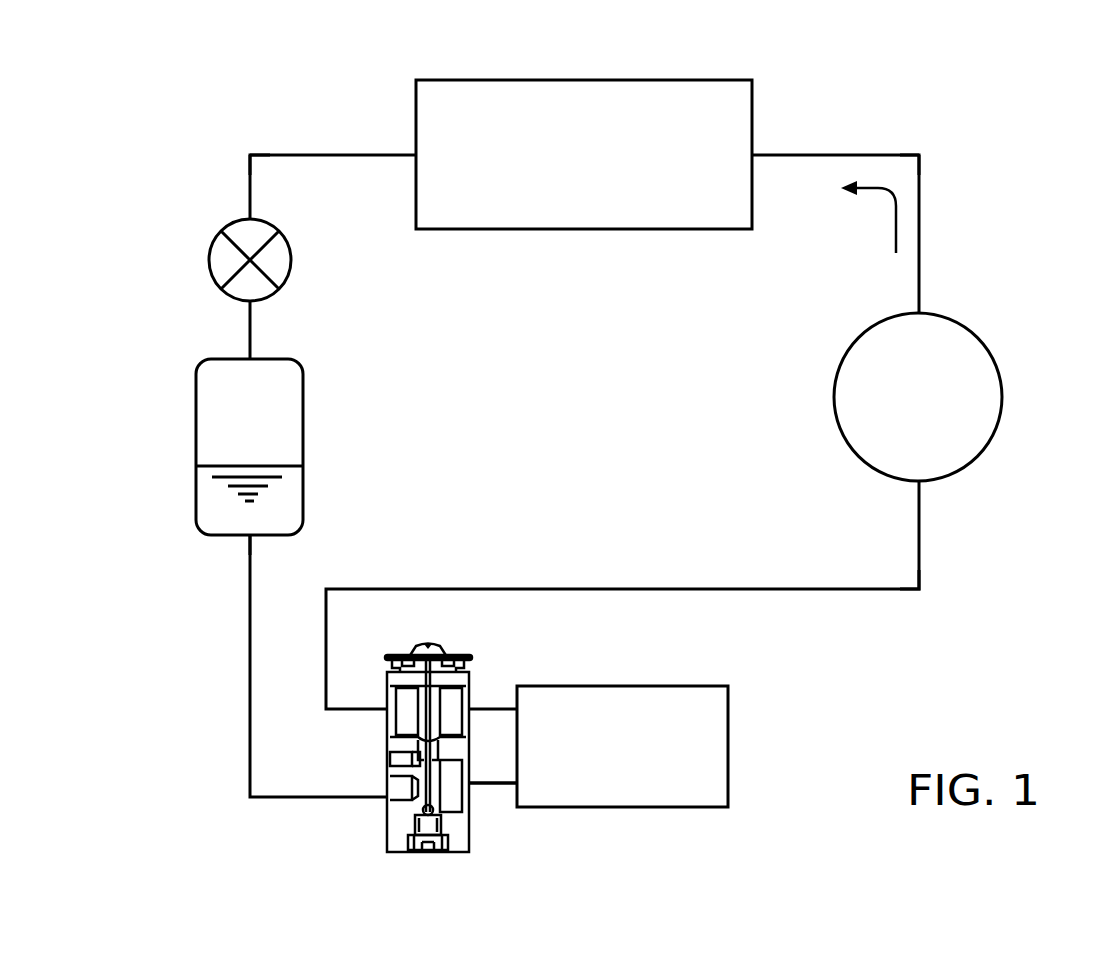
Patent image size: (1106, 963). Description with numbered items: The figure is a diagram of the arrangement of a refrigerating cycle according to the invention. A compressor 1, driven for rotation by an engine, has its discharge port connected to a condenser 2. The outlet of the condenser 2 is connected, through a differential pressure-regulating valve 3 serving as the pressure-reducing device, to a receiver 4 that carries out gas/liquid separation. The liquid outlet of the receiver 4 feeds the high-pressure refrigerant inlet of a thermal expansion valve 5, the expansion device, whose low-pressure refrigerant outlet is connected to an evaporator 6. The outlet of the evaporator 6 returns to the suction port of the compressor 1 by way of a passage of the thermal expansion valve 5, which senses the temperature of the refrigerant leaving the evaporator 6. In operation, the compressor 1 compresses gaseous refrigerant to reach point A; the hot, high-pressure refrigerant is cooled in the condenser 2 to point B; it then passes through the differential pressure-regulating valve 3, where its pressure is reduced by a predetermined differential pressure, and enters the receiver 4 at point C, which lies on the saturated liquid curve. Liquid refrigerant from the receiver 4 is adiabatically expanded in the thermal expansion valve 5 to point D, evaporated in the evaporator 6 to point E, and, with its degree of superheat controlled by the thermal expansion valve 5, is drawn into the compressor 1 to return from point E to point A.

The compressor 1 is at (985, 343).
The condenser 2 is at (753, 108).
The differential pressure-regulating valve 3 is at (291, 260).
The receiver 4 is at (303, 402).
The thermal expansion valve 5 is at (472, 668).
The evaporator 6 is at (728, 718).
The point A is at (919, 155).
The point B is at (250, 155).
The point C is at (294, 512).
The point D is at (490, 783).
The point E is at (919, 589).